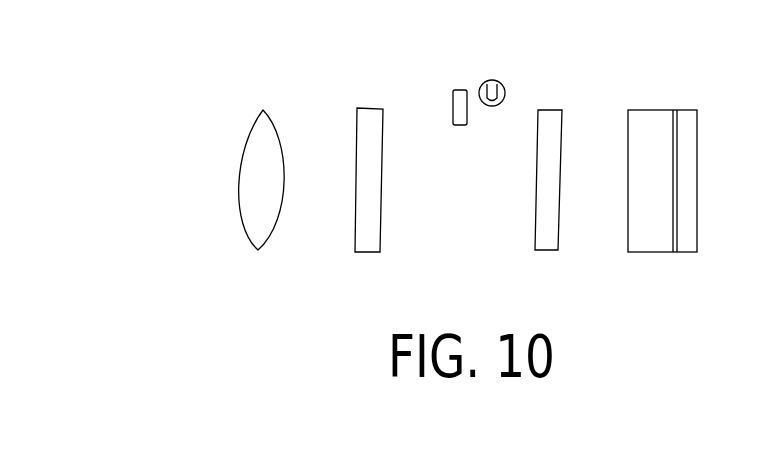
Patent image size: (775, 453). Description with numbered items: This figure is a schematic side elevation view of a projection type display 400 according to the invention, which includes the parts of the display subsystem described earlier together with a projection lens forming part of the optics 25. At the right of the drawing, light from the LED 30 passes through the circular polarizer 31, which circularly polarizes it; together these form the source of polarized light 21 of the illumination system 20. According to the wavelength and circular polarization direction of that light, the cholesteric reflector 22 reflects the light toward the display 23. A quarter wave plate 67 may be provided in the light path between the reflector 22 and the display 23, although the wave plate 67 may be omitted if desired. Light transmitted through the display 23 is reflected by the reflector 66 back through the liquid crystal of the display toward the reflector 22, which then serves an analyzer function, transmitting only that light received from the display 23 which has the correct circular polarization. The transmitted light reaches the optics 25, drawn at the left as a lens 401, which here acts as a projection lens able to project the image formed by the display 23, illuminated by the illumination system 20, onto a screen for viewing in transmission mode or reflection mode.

The optics system 25 is at (274, 76).
The projection type display 400 is at (314, 70).
The lens 401 is at (250, 133).
The cholesteric reflector 22 is at (366, 108).
The illumination system 20 is at (424, 95).
The source of polarized light 21 is at (444, 90).
The circular polarizer 31 is at (460, 90).
The LED 30 is at (498, 82).
The quarter wave plate 67 is at (543, 250).
The display 23 is at (642, 252).
The reflector 66 is at (693, 252).